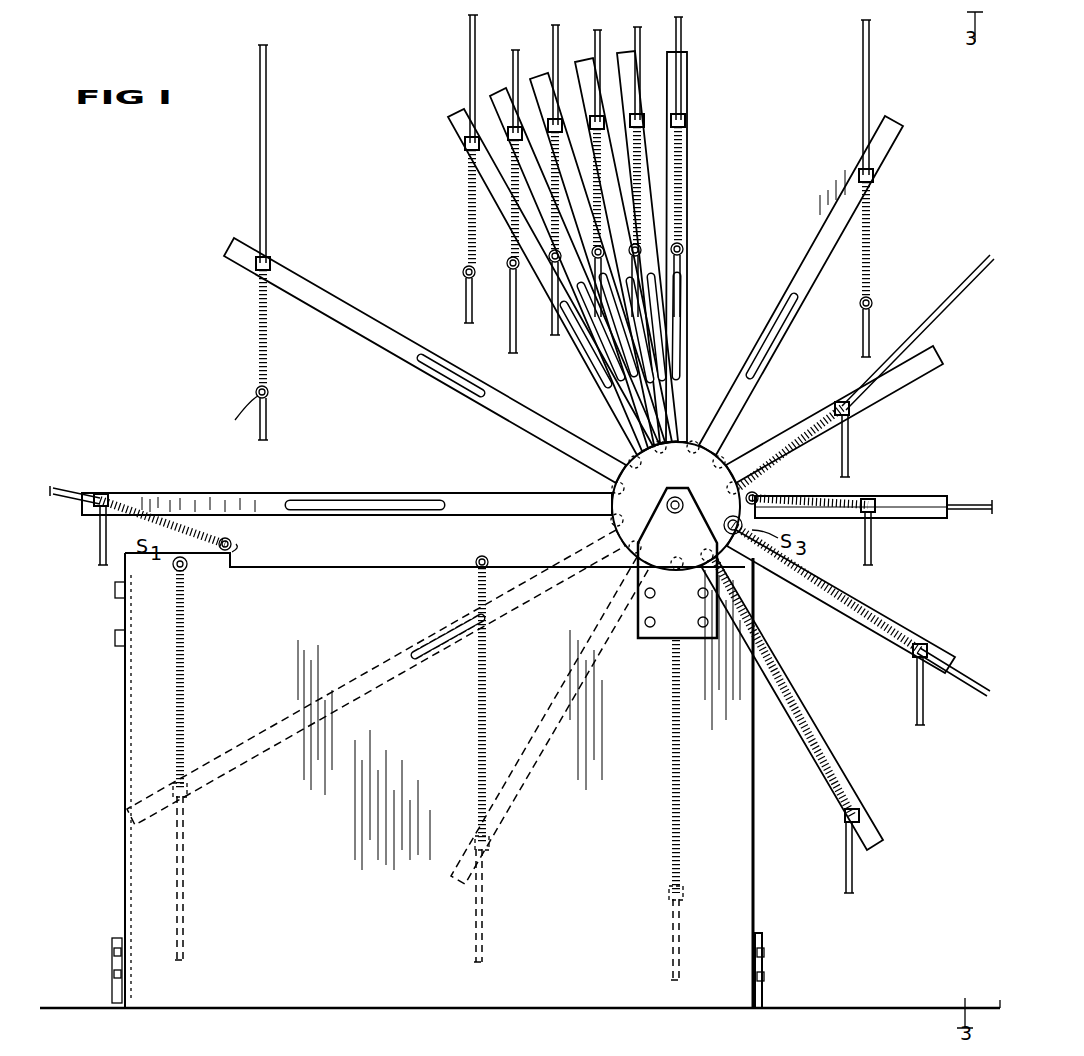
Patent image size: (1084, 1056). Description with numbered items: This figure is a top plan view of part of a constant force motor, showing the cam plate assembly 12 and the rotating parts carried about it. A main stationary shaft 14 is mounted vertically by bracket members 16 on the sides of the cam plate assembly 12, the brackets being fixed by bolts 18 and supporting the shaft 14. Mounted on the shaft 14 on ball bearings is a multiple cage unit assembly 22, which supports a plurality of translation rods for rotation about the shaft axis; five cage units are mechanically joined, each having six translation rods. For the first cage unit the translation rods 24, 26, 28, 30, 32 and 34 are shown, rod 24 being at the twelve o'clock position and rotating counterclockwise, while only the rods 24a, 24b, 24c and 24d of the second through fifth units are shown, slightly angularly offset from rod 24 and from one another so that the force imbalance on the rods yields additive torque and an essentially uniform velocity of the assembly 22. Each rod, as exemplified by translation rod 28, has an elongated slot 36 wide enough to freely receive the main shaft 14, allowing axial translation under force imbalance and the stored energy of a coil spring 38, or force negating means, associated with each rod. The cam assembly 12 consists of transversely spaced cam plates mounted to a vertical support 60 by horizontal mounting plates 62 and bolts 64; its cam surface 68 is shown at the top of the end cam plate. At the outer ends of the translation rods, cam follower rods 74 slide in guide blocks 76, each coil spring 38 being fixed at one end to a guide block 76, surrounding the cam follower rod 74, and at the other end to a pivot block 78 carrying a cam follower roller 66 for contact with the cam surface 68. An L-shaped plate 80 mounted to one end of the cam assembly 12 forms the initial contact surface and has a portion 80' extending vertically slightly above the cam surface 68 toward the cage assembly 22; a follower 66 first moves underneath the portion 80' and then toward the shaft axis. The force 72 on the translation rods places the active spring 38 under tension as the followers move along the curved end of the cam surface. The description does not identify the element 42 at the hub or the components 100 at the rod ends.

The cam plate assembly 12 is at (732, 802).
The main stationary shaft 14 is at (650, 625).
The bracket member 16 is at (650, 553).
The bolts 18 is at (698, 630).
The multiple cage unit assembly 22 is at (728, 447).
The translation rod 24 is at (685, 290).
The translation rod of second cage unit 24a is at (650, 245).
The translation rod of third cage unit 24b is at (615, 232).
The translation rod of fourth cage unit 24c is at (575, 208).
The translation rod of fifth cage unit 24d is at (540, 178).
The translation rod 26 is at (545, 275).
The translation rod 28 is at (412, 352).
The translation rod 30 is at (265, 493).
The translation rod 32 is at (295, 740).
The translation rod 34 is at (508, 805).
The elongated slot 36 is at (680, 345).
The coil spring 38 is at (266, 350).
The pivot eye 42 is at (735, 540).
The vertical support 60 is at (802, 990).
The horizontal mounting plates 62 is at (112, 940).
The bolts 64 is at (764, 952).
The cam follower roller 66 is at (266, 388).
The cam surface 68 is at (275, 565).
The force on translation rod 72 is at (668, 893).
The cam follower rod 74 is at (263, 183).
The guide block 76 is at (232, 244).
The cam follower roller pivot block 78 is at (234, 414).
The L-shaped plate 80 is at (107, 614).
The vertically extending plate portion 80' is at (201, 579).
The marker rod 100 is at (602, 292).